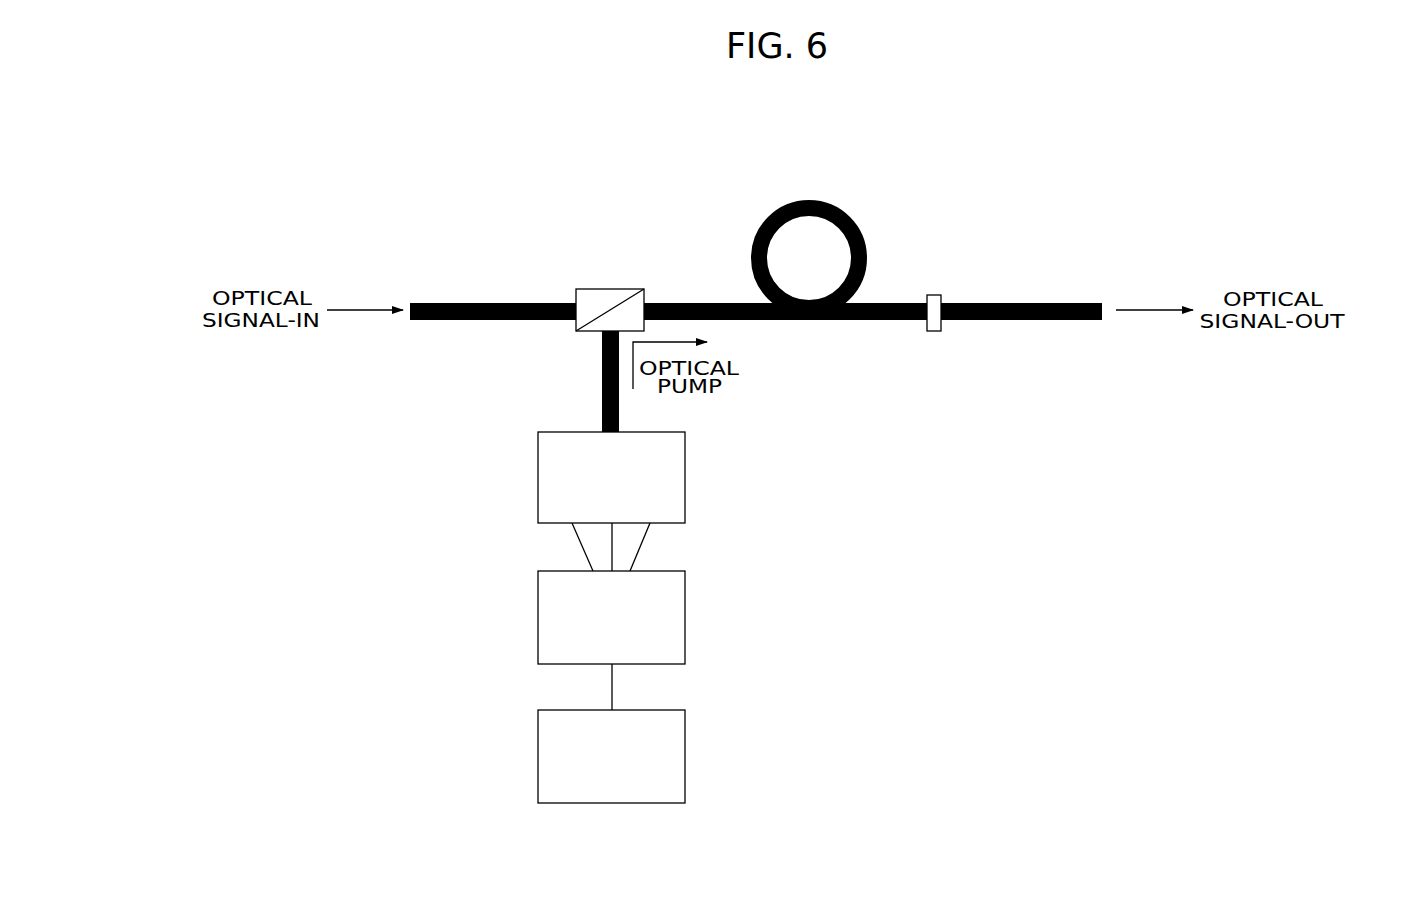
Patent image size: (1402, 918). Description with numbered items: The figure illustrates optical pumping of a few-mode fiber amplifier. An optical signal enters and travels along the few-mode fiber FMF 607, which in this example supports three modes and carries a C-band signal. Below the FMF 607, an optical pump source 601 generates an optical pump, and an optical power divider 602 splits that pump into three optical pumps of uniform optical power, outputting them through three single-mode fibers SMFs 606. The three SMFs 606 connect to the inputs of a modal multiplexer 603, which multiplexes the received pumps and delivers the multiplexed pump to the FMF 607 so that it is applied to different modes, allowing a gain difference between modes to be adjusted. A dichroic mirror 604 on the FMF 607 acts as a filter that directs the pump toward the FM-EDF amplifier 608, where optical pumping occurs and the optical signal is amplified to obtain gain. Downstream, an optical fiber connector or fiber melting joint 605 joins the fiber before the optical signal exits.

The optical pump source 601 is at (538, 753).
The optical power divider 602 is at (538, 613).
The modal multiplexer 603 is at (538, 473).
The dichroic mirror 604 is at (610, 287).
The optical fiber connector 605 is at (932, 332).
The SMFs 606 is at (590, 563).
The FMF 607 is at (453, 302).
The FM-EDF amplifier 608 is at (847, 213).